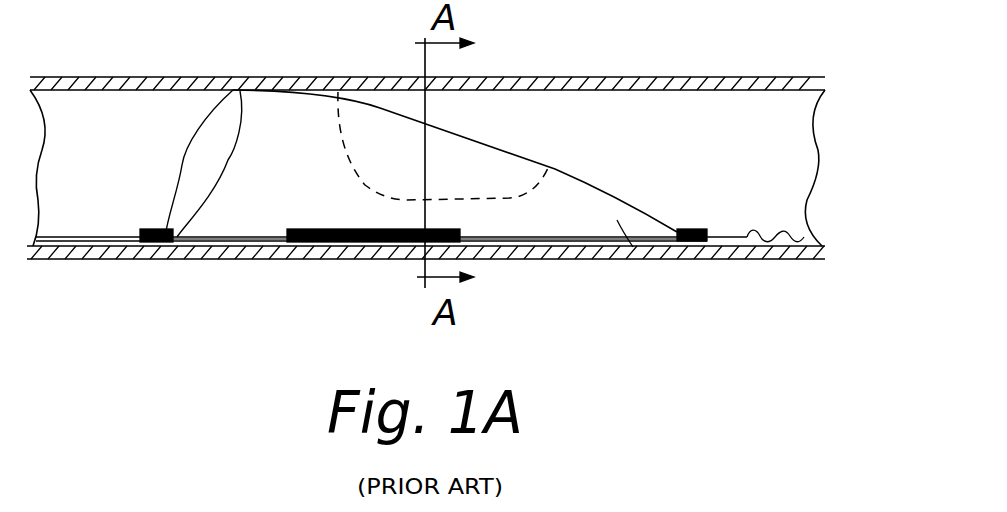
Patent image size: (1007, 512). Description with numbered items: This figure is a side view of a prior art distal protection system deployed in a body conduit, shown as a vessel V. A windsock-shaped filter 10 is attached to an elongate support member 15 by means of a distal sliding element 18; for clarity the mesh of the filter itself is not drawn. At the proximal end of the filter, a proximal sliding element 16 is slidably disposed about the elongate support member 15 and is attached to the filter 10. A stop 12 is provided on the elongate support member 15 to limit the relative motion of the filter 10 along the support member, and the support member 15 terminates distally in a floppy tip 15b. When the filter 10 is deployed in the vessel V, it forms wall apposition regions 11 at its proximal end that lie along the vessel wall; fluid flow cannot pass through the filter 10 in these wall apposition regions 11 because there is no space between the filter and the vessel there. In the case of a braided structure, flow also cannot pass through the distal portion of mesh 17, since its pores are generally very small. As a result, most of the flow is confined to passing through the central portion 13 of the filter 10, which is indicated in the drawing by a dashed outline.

The vessel V is at (83, 77).
The tether 10 is at (588, 184).
The tether line loop 11 is at (322, 97).
The electrode / block 12 is at (325, 230).
The expanded region (dashed) 13 is at (468, 157).
The plate / substrate 15 is at (98, 236).
The plate end 15b is at (773, 237).
The anchor block 16 is at (162, 243).
The connector 17 is at (633, 247).
The anchor block 18 is at (687, 243).